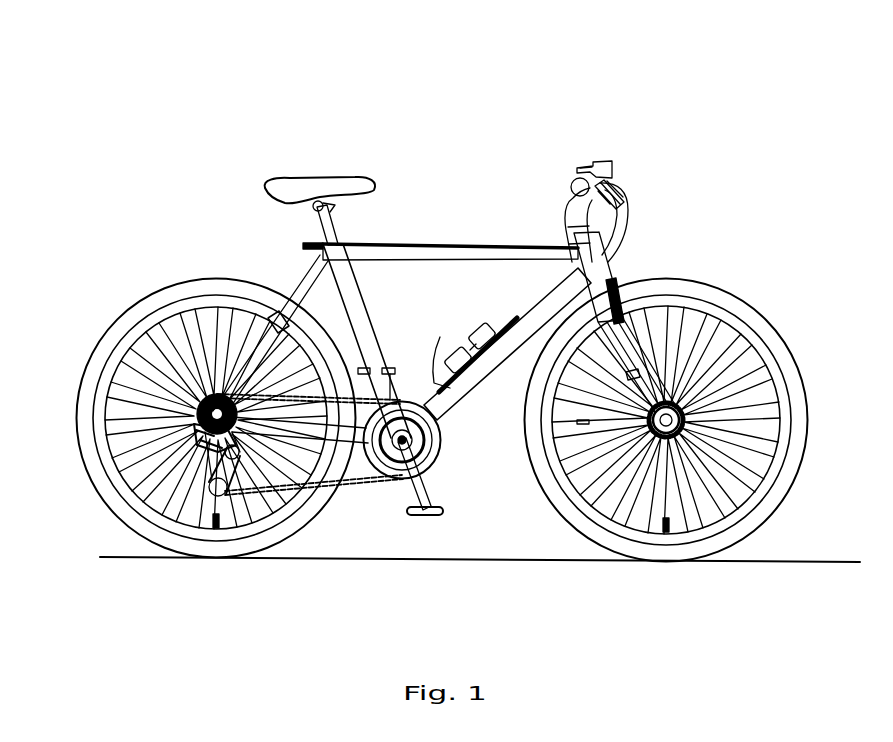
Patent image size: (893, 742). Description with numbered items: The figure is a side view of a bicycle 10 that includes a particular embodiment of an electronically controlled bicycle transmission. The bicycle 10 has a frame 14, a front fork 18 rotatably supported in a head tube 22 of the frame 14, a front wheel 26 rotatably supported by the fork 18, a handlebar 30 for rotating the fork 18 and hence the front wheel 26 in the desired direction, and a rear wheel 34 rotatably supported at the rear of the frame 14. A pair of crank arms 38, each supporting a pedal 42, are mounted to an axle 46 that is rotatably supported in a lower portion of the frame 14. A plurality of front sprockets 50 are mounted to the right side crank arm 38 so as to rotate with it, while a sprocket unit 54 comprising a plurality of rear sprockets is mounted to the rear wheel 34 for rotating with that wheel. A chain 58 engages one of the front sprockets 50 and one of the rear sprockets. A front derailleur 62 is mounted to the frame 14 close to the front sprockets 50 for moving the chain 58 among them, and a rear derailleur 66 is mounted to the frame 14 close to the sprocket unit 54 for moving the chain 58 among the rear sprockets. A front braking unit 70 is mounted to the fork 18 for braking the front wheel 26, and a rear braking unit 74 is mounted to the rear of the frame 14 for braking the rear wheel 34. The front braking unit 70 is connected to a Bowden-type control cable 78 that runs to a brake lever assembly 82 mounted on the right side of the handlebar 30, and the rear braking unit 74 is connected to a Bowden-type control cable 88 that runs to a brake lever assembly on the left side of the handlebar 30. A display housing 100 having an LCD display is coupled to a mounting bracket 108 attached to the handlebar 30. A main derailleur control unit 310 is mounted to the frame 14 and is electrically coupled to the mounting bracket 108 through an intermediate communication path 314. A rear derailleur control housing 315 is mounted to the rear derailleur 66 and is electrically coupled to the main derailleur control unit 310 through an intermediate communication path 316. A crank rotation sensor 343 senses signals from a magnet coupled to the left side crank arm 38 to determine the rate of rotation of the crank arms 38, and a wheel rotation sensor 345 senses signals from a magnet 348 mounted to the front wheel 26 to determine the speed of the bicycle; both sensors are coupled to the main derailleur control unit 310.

The bicycle 10 is at (369, 77).
The frame 14 is at (427, 244).
The front fork 18 is at (616, 296).
The head tube 22 is at (568, 236).
The front wheel 26 is at (668, 420).
The handlebar 30 is at (571, 183).
The rear wheel 34 is at (186, 418).
The crank arms 38 is at (428, 487).
The pedal 42 is at (428, 516).
The axle 46 is at (412, 441).
The front sprockets 50 is at (440, 423).
The sprocket unit 54 is at (190, 400).
The chain 58 is at (357, 490).
The front derailleur 62 is at (397, 393).
The rear derailleur 66 is at (167, 441).
The front braking unit 70 is at (624, 312).
The rear braking unit 74 is at (260, 313).
The Bowden-type control cable 78 is at (605, 258).
The brake lever assembly 82 is at (624, 195).
The Bowden-type control cable 88 is at (307, 270).
The display housing 100 is at (597, 161).
The mounting bracket 108 is at (612, 168).
The main derailleur control unit 310 is at (470, 330).
The intermediate communication path 314 is at (515, 317).
The rear derailleur control housing 315 is at (127, 510).
The intermediate communication path 316 is at (432, 350).
The crank rotation sensor 343 is at (258, 360).
The wheel rotation sensor 345 is at (640, 375).
The magnet 348 is at (583, 424).